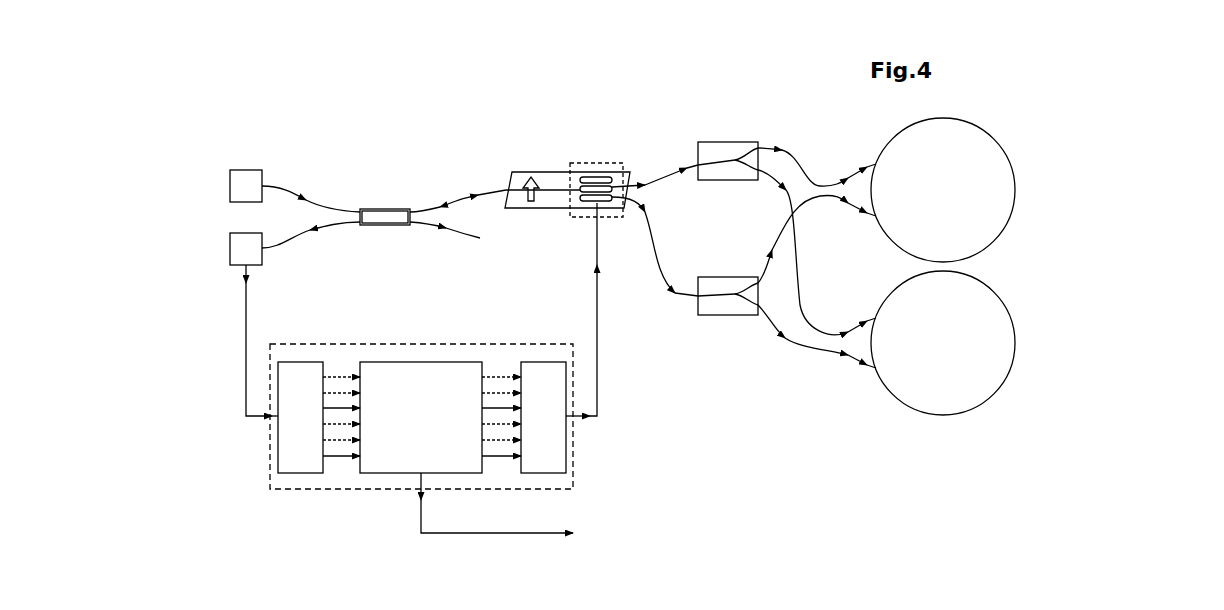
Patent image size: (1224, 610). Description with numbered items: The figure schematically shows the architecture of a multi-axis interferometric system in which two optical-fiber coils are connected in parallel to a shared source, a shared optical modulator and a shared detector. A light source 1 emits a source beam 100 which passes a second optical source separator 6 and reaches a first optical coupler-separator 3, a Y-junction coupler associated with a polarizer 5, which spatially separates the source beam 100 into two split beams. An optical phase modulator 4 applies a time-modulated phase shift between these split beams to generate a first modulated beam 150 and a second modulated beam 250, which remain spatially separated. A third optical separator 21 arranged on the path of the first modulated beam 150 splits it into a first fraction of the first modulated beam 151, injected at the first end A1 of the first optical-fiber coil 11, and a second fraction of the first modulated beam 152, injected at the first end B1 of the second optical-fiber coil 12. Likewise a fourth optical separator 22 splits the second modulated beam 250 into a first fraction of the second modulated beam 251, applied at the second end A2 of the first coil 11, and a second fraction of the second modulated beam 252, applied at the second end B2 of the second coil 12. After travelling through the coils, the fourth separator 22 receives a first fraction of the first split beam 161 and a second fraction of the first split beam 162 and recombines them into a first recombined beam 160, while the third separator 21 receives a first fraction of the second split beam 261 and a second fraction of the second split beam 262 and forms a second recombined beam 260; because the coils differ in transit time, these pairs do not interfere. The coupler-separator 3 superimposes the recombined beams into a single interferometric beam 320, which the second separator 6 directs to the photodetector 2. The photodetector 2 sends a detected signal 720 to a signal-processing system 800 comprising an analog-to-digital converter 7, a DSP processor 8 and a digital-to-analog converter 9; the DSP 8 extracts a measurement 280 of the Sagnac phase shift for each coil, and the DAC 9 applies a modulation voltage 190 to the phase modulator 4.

The light source 1 is at (247, 170).
The photodetector 2 is at (230, 248).
The first optical coupler-separator 3 is at (580, 205).
The optical phase modulator 4 is at (578, 163).
The polarizer 5 is at (530, 209).
The second optical source separator 6 is at (380, 208).
The analog-to-digital converter 7 is at (300, 473).
The DSP processor 8 is at (425, 362).
The digital-to-analog converter 9 is at (530, 362).
The first optical-fiber coil 11 is at (943, 190).
The second optical-fiber coil 12 is at (943, 343).
The third optical separator 21 is at (738, 142).
The fourth optical separator 22 is at (722, 315).
The source beam 100 is at (310, 198).
The interferometric beam 320 is at (440, 204).
The first modulated beam 150 is at (645, 182).
The second modulated beam 250 is at (645, 215).
The first recombined beam 160 is at (672, 298).
The second recombined beam 260 is at (686, 166).
The modulation voltage 190 is at (595, 268).
The first fraction of the first split beam 161 is at (771, 250).
The second fraction of the first split beam 162 is at (785, 340).
The first fraction of the second split beam 261 is at (782, 148).
The second fraction of the second split beam 262 is at (785, 191).
The first fraction of the first modulated beam 151 is at (847, 176).
The second fraction of the first modulated beam 152 is at (847, 330).
The first fraction of the second modulated beam 251 is at (847, 205).
The second fraction of the second modulated beam 252 is at (848, 358).
The first end of the first optical-fiber coil A1 is at (864, 153).
The second end of the first optical-fiber coil A2 is at (864, 228).
The first end of the second optical-fiber coil B1 is at (864, 307).
The second end of the second optical-fiber coil B2 is at (864, 380).
The detected signal 720 is at (244, 285).
The measurement 280 is at (575, 536).
The signal-processing system 800 is at (574, 465).